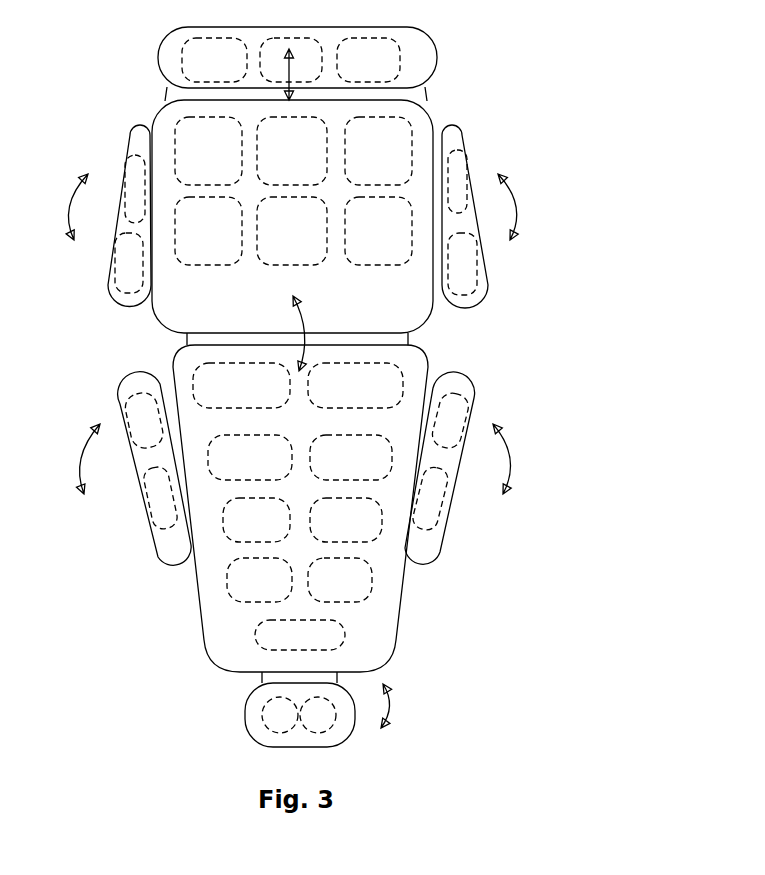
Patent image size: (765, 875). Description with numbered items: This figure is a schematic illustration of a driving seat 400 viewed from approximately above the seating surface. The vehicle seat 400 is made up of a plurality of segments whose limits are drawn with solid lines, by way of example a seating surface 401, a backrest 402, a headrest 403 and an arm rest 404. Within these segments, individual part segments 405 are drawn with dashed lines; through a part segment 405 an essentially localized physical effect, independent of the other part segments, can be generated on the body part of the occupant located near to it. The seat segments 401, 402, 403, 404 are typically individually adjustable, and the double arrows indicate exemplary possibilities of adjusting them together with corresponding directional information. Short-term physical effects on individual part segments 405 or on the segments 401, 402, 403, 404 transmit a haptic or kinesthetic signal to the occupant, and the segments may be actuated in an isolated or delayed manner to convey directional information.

The driving seat 400 is at (487, 78).
The seating surface 401 is at (423, 318).
The backrest 402 is at (383, 615).
The headrest 403 is at (247, 717).
The arm rest 404 is at (480, 283).
The part segments 405 is at (202, 381).